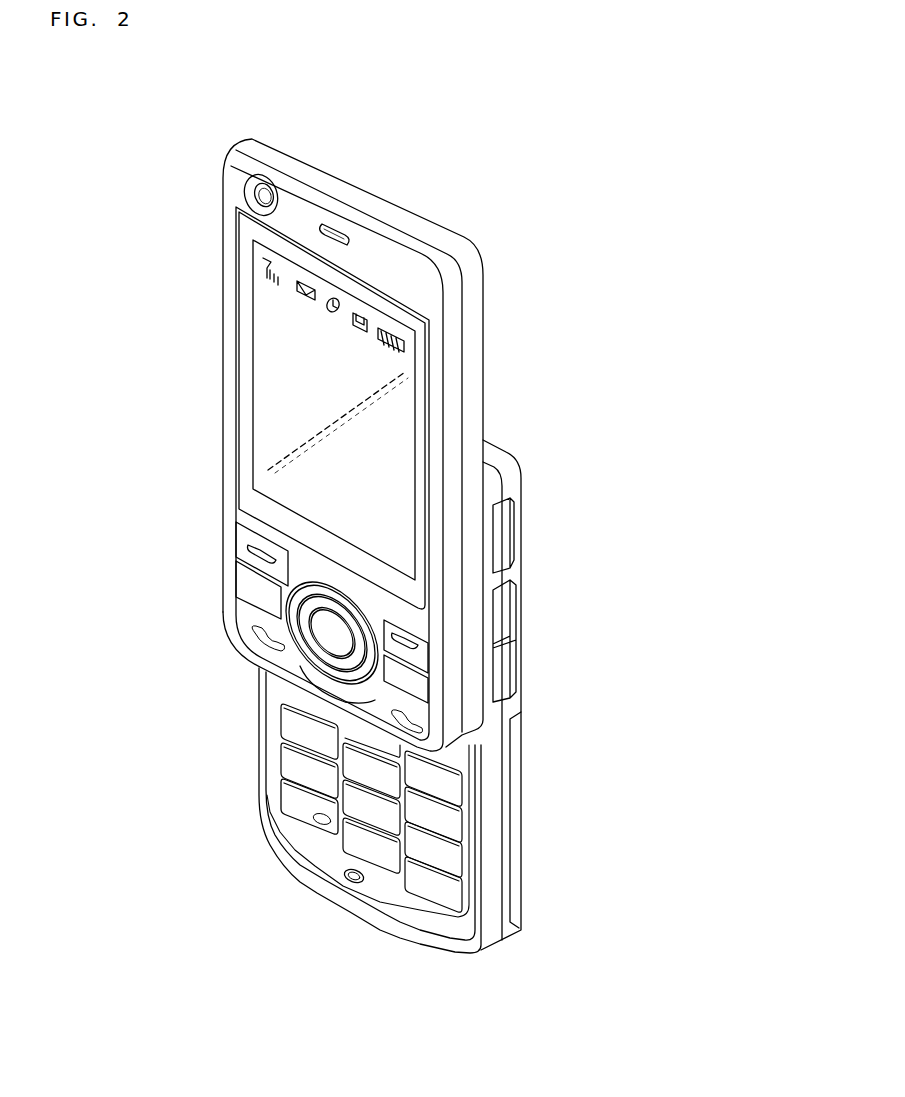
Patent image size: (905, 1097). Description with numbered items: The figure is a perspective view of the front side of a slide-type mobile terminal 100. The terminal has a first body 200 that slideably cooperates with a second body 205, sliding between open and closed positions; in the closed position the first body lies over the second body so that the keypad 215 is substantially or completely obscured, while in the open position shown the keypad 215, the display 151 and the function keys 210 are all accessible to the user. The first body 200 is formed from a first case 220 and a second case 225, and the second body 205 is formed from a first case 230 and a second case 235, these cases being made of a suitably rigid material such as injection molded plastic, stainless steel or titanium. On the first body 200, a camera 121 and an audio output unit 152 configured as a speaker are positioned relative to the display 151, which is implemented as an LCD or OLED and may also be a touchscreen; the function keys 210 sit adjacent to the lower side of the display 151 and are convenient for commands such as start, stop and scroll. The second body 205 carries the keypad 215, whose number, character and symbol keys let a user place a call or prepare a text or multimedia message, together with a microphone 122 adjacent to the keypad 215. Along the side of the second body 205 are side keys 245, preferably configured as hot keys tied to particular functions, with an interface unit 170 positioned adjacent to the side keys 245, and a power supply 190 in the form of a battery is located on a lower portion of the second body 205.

The mobile terminal 100 is at (512, 164).
The camera 121 is at (262, 197).
The microphone 122 is at (353, 884).
The display 151 is at (268, 360).
The audio output unit 152 is at (334, 228).
The interface unit 170 is at (505, 534).
The power supply 190 is at (515, 803).
The first body 200 is at (195, 273).
The second body 205 is at (250, 742).
The function keys 210 is at (247, 583).
The keypad 215 is at (292, 793).
The first case 220 is at (458, 353).
The second case 225 is at (470, 312).
The first case 230 is at (490, 477).
The second case 235 is at (513, 498).
The side keys 245 is at (509, 667).